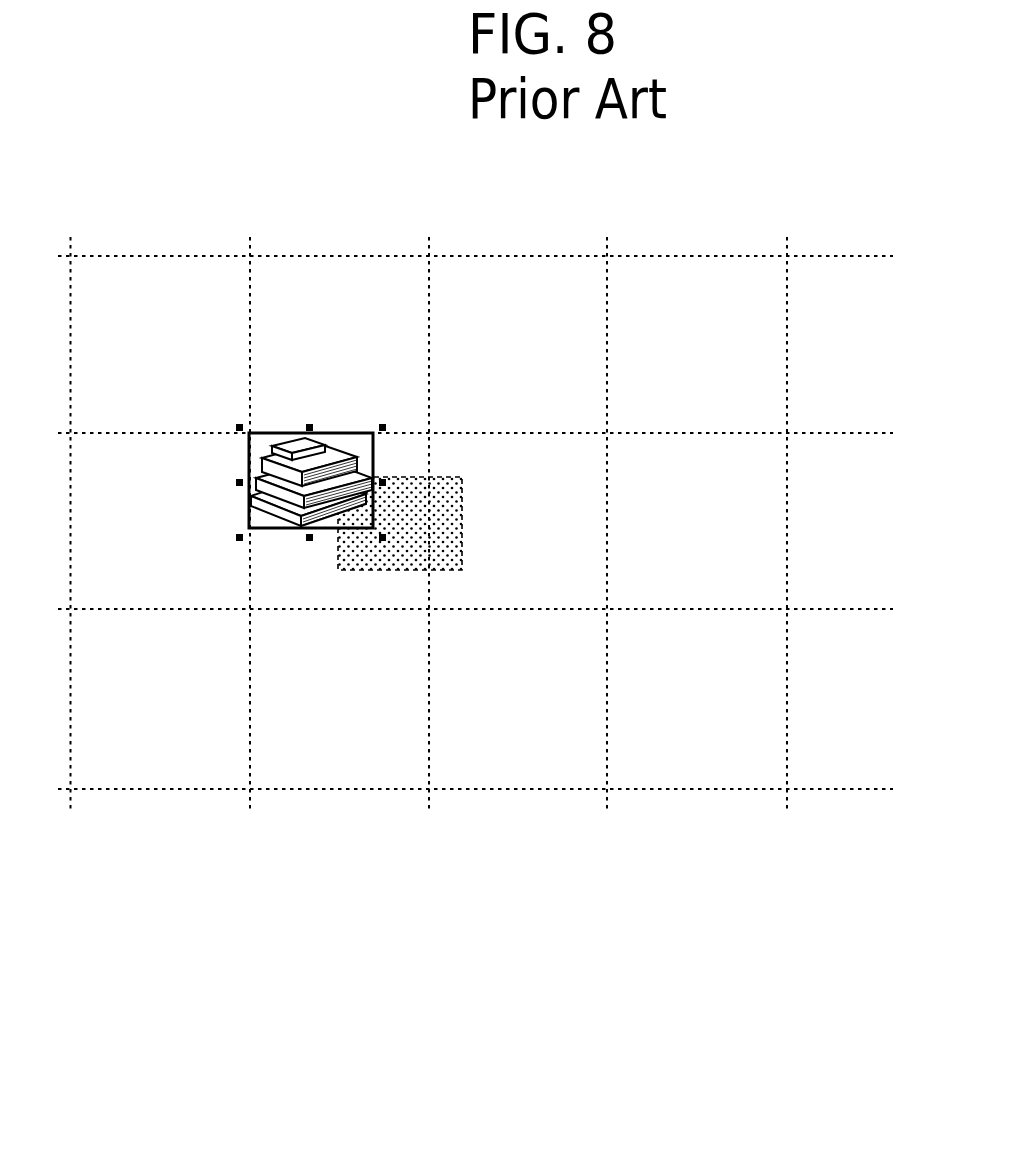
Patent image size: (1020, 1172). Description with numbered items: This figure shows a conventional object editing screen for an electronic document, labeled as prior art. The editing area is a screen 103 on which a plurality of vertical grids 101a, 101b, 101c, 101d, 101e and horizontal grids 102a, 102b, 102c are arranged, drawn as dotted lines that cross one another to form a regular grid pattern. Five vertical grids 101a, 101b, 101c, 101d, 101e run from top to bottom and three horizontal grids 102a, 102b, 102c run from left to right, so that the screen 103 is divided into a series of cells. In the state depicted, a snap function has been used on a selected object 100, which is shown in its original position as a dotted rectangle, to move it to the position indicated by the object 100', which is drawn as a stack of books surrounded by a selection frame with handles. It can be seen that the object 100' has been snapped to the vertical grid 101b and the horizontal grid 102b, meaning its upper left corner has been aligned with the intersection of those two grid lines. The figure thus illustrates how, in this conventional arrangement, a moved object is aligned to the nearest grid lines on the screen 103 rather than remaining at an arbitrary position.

The selected object 100 is at (484, 377).
The object 100' is at (337, 363).
The vertical grid 101a is at (70, 769).
The vertical grid 101b is at (250, 769).
The vertical grid 101c is at (429, 769).
The vertical grid 101d is at (607, 769).
The vertical grid 101e is at (787, 769).
The horizontal grid 102a is at (857, 256).
The horizontal grid 102b is at (857, 433).
The horizontal grid 102c is at (857, 609).
The screen 103 is at (487, 927).